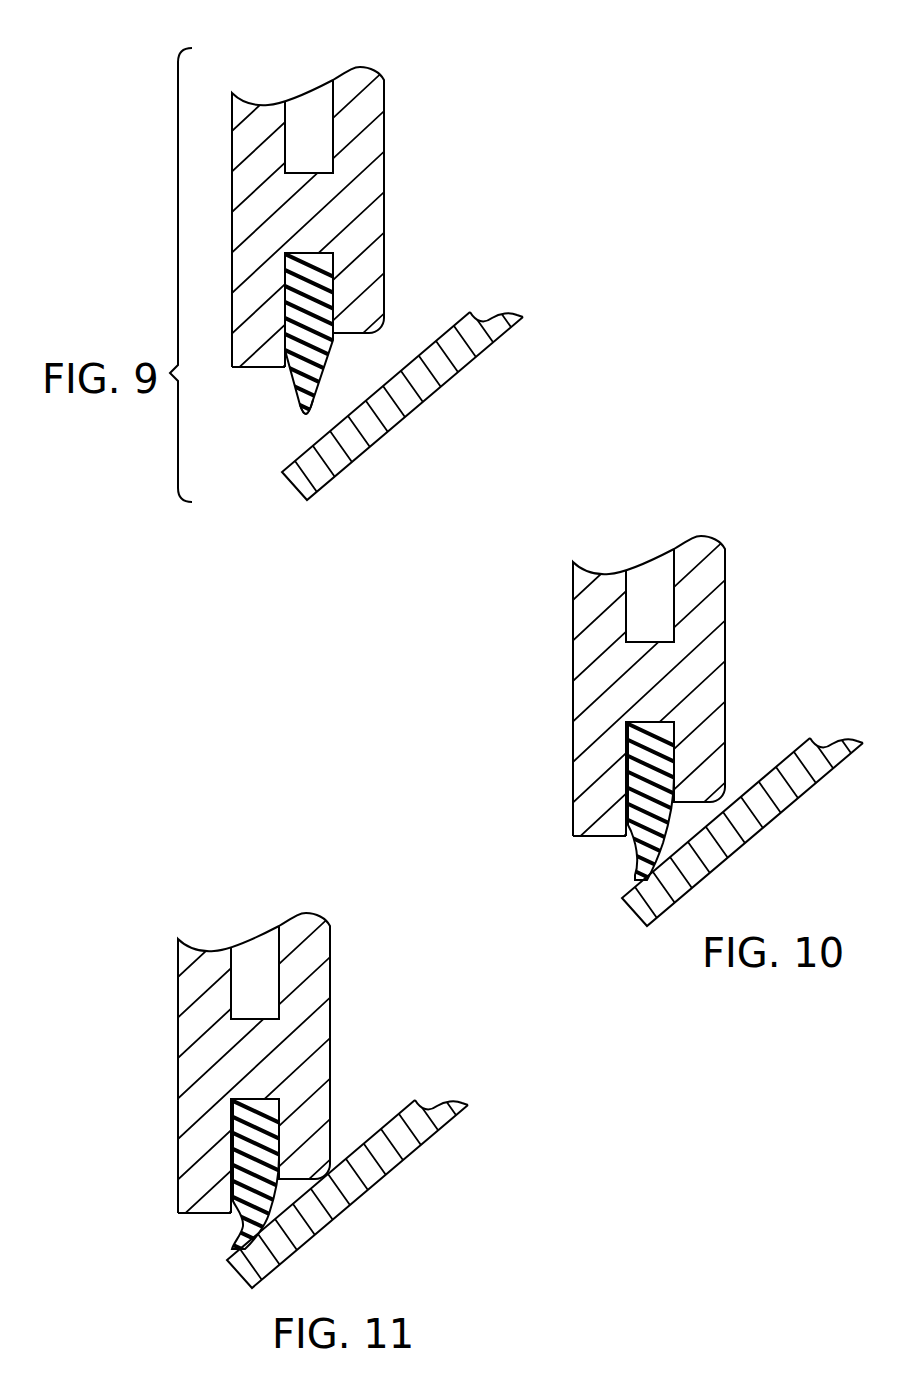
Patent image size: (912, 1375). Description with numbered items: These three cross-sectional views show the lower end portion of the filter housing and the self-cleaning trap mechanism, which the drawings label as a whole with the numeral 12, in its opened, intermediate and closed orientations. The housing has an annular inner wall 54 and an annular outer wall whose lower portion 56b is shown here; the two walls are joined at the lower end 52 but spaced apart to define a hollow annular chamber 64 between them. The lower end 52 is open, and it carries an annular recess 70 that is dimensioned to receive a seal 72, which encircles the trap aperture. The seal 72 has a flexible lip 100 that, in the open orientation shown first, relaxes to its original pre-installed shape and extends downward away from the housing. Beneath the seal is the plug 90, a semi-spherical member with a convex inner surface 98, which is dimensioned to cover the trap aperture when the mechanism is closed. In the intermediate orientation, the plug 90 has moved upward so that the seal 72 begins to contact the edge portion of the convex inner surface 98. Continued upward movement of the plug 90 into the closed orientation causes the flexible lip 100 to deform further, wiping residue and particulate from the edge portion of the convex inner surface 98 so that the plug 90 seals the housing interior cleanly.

In FIG. 9, the retention assembly 12 is at (250, 50).
In FIG. 10, the retention assembly 12 is at (639, 729).
In FIG. 11, the retention assembly 12 is at (244, 1100).
In FIG. 9, the lower end 52 is at (260, 368).
In FIG. 10, the lower end 52 is at (580, 859).
In FIG. 11, the lower end 52 is at (186, 1236).
In FIG. 9, the annular inner wall 54 is at (365, 142).
In FIG. 10, the annular inner wall 54 is at (679, 686).
In FIG. 11, the annular inner wall 54 is at (285, 1063).
In FIG. 9, the lower portion 56b is at (250, 138).
In FIG. 10, the lower portion 56b is at (614, 729).
In FIG. 11, the lower portion 56b is at (218, 1100).
In FIG. 9, the hollow annular chamber 64 is at (308, 115).
In FIG. 10, the hollow annular chamber 64 is at (650, 580).
In FIG. 11, the hollow annular chamber 64 is at (255, 957).
In FIG. 9, the annular recess 70 is at (337, 273).
In FIG. 10, the annular recess 70 is at (699, 777).
In FIG. 11, the annular recess 70 is at (304, 1154).
In FIG. 9, the seal 72 is at (313, 297).
In FIG. 10, the seal 72 is at (604, 814).
In FIG. 11, the seal 72 is at (210, 1191).
In FIG. 9, the plug 90 is at (475, 350).
In FIG. 10, the plug 90 is at (758, 817).
In FIG. 11, the plug 90 is at (363, 1179).
In FIG. 9, the convex inner surface 98 is at (442, 333).
In FIG. 10, the convex inner surface 98 is at (822, 729).
In FIG. 11, the convex inner surface 98 is at (426, 1088).
In FIG. 9, the flexible lip 100 is at (303, 412).
In FIG. 10, the flexible lip 100 is at (613, 912).
In FIG. 11, the flexible lip 100 is at (208, 1285).